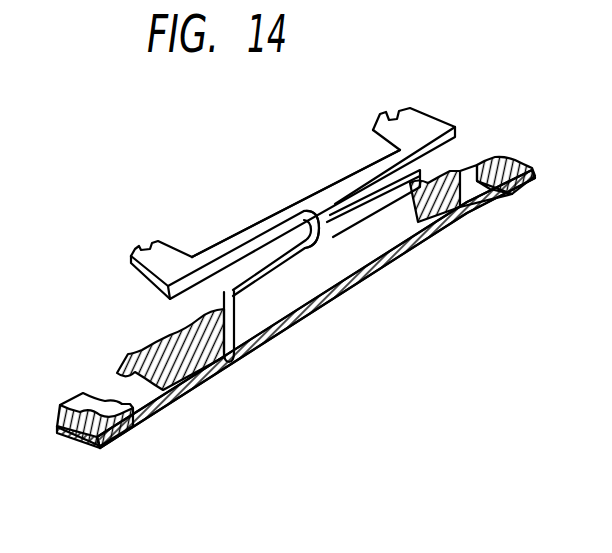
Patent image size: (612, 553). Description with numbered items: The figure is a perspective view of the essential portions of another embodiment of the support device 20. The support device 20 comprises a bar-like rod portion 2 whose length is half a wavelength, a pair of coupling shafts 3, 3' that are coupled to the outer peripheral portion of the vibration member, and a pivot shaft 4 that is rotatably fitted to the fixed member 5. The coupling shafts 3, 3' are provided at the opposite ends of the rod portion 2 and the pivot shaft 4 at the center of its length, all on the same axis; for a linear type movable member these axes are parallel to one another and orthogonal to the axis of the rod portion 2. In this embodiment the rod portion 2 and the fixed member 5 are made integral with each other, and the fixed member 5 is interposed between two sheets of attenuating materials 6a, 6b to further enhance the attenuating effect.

The support device 20 is at (284, 127).
The rod portion 2 is at (245, 232).
The coupling shaft 3 is at (161, 221).
The coupling shaft 3' is at (419, 89).
The pivot shaft 4 is at (340, 213).
The fixed member 5 is at (102, 396).
The attenuating material 6a is at (141, 362).
The attenuating material 6b is at (92, 450).